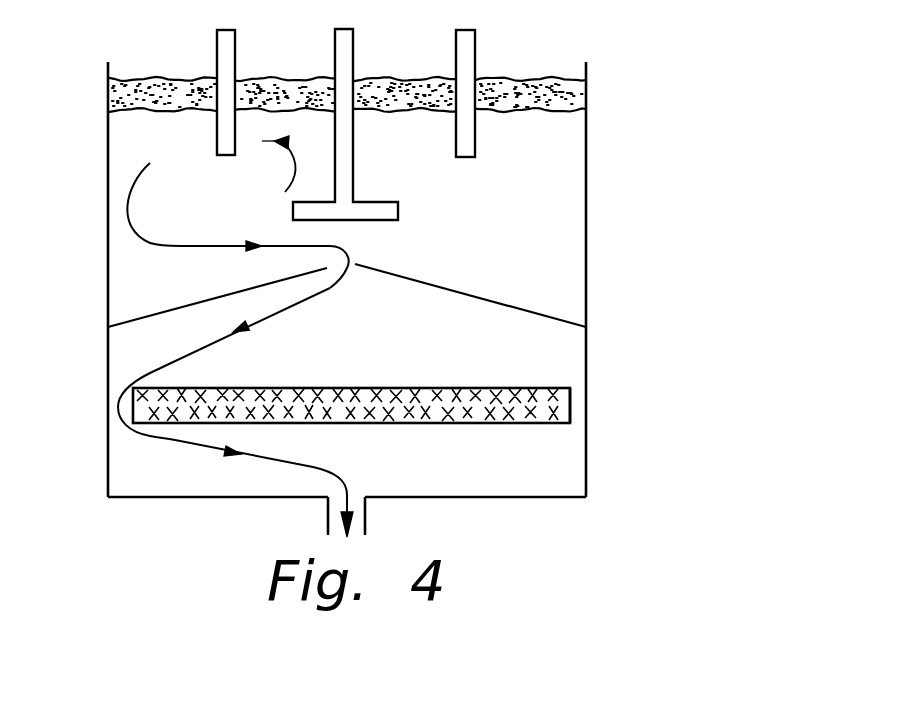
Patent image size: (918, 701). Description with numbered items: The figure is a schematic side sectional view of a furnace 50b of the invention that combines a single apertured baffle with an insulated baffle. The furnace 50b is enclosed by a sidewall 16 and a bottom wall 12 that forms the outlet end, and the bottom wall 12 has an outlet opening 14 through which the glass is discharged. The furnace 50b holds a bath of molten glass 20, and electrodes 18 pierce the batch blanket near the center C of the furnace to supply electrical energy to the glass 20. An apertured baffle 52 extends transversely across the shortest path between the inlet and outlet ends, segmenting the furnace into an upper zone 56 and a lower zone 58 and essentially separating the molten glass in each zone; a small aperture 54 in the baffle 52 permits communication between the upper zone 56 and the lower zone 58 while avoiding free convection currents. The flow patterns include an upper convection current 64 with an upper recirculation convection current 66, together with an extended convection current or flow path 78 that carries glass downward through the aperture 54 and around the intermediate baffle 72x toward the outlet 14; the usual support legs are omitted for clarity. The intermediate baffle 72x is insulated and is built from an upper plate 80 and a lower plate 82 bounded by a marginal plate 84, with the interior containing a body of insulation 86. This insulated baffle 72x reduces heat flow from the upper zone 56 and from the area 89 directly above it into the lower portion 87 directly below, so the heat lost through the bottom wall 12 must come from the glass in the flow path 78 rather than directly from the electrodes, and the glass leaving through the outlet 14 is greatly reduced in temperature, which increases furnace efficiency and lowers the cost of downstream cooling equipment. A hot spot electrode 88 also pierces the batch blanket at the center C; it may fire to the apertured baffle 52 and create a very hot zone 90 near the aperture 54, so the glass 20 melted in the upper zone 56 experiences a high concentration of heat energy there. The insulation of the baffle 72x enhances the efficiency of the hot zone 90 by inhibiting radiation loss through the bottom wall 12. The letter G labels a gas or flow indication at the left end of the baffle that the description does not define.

The bottom wall 12 is at (528, 497).
The outlet opening 14 is at (367, 517).
The sidewall 16 is at (586, 140).
The electrodes 18 is at (215, 47).
The molten glass 20 is at (523, 201).
The furnace 50b is at (657, 31).
The apertured baffle 52 is at (548, 313).
The aperture 54 is at (357, 265).
The upper zone 56 is at (614, 204).
The lower zone 58 is at (614, 348).
The upper convection current 64 is at (150, 163).
The upper recirculation convection current 66 is at (292, 175).
The intermediate baffle 72x is at (400, 406).
The extended convection current 78 is at (180, 357).
The upper plate 80 is at (495, 388).
The lower plate 82 is at (510, 410).
The marginal plate 84 is at (570, 412).
The body of insulation 86 is at (438, 410).
The lower portion 87 is at (393, 475).
The hot spot electrode 88 is at (335, 40).
The area above the baffle 89 is at (330, 359).
The hot zone 90 is at (355, 236).
The center C is at (319, 130).
The gas G is at (117, 406).